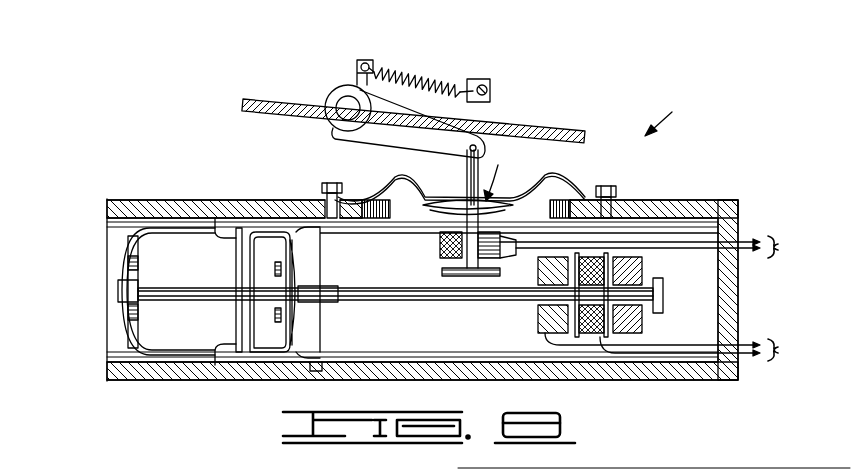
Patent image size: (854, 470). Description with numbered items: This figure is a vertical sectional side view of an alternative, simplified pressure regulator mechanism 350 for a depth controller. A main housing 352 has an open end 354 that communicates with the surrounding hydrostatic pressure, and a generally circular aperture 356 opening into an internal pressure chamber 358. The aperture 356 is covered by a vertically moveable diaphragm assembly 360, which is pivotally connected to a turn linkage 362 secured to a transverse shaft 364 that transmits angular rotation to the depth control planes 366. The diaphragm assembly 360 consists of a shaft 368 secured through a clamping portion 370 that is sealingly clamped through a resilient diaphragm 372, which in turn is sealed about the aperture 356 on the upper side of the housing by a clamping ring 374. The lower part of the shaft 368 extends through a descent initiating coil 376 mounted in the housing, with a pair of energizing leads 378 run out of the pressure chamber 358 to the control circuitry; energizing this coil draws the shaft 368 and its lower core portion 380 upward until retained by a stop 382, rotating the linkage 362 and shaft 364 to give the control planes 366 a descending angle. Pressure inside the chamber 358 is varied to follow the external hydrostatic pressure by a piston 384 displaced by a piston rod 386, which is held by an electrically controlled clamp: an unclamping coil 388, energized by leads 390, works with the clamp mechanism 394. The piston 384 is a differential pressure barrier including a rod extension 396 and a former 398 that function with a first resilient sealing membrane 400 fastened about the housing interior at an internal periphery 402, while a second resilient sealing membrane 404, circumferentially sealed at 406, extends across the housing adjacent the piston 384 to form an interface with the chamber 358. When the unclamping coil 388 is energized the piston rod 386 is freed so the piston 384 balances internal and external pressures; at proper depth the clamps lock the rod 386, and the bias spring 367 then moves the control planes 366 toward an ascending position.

The pressure regulator mechanism 350 is at (678, 120).
The main housing 352 is at (692, 213).
The open end 354 is at (108, 258).
The circular aperture 356 is at (545, 213).
The internal pressure chamber 358 is at (426, 336).
The diaphragm assembly 360 is at (503, 197).
The turn linkage 362 is at (363, 138).
The transverse shaft 364 is at (352, 96).
The depth control planes 366 is at (505, 123).
The bias spring 367 is at (415, 72).
The shaft 368 is at (467, 176).
The clamping portion 370 is at (505, 175).
The resilient diaphragm 372 is at (396, 180).
The clamping ring 374 is at (625, 200).
The descent initiating coil 376 is at (440, 243).
The energizing leads 378 is at (656, 247).
The lower core portion 380 is at (455, 264).
The stop 382 is at (455, 278).
The piston 384 is at (295, 278).
The piston rod 386 is at (335, 300).
The unclamping coil 388 is at (590, 337).
The leads 390 is at (550, 320).
The clamp mechanism 394 is at (636, 320).
The rod extension 396 is at (206, 300).
The former 398 is at (124, 302).
The first resilient sealing membrane 400 is at (124, 282).
The internal periphery 402 is at (215, 368).
The second resilient sealing membrane 404 is at (307, 363).
The circumferential seal 406 is at (318, 370).